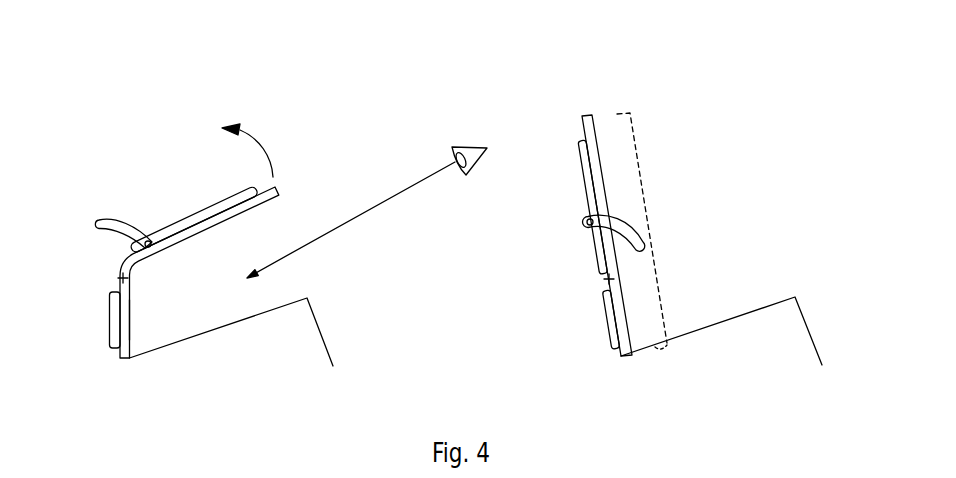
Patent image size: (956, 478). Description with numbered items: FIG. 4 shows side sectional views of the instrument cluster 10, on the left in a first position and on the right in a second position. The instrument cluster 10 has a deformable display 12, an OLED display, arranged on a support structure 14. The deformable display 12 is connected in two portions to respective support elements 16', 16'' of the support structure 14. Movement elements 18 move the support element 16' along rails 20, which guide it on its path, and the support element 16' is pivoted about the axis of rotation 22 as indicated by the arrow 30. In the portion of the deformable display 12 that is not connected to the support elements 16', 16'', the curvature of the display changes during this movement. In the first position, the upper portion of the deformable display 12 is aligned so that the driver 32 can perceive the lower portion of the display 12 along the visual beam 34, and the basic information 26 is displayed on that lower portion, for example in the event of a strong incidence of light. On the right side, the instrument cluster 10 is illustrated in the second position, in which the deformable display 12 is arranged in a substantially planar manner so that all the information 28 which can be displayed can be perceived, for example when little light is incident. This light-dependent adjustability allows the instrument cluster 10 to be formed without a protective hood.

The instrument cluster 10 is at (135, 147).
The deformable display 12 is at (216, 239).
The support structure 14 is at (341, 269).
The support element 16' is at (369, 207).
The support element 16'' is at (341, 346).
The movement element 18 is at (157, 251).
The rail 20 is at (110, 220).
The axis of rotation 22 is at (118, 277).
The basic information 26 is at (140, 318).
The information 28 is at (652, 227).
The arrow 30 is at (252, 132).
The driver 32 is at (467, 146).
The visual beam 34 is at (352, 216).